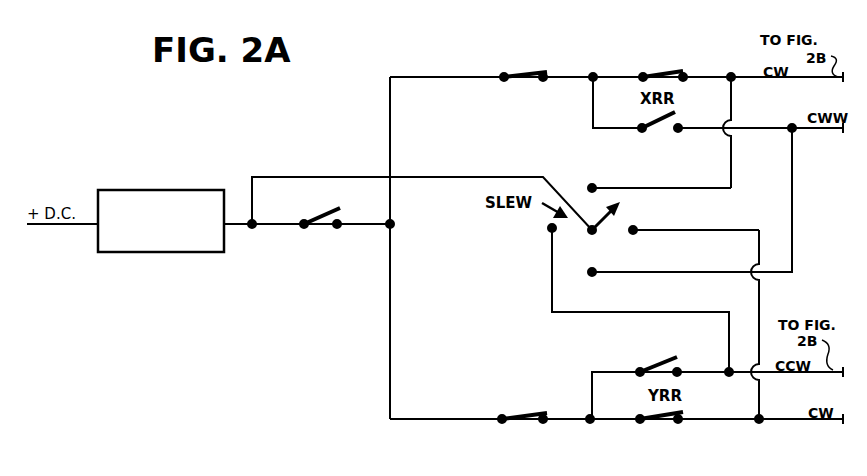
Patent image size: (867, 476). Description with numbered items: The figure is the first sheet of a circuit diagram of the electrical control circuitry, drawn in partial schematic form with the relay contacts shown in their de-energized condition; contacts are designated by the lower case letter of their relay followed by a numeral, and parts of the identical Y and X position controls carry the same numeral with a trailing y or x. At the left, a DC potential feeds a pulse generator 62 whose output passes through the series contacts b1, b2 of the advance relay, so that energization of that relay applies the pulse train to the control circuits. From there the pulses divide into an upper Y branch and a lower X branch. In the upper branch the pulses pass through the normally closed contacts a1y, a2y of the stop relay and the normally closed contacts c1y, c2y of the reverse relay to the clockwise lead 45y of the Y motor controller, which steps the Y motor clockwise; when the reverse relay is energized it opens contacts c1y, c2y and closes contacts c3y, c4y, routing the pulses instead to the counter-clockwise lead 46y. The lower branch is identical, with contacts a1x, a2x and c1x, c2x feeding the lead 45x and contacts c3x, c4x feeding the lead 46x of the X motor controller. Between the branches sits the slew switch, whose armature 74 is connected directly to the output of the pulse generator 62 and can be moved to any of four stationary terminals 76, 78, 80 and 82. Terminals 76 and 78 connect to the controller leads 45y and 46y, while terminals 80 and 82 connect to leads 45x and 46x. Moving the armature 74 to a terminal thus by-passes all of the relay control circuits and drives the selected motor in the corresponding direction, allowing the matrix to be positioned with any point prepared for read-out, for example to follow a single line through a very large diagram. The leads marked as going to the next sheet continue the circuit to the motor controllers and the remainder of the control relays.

The pulse generator 62 is at (178, 190).
The armature 74 is at (607, 220).
The stationary terminal 76 is at (590, 184).
The stationary terminal 78 is at (594, 276).
The stationary terminal 80 is at (549, 230).
The stationary terminal 82 is at (633, 234).
The clockwise lead 45y is at (814, 78).
The controller lead 46y is at (814, 129).
The controller lead 45x is at (815, 373).
The controller lead 46x is at (800, 420).
The relay contact a1y is at (524, 72).
The relay contact a2y is at (543, 80).
The relay contact b1 is at (316, 212).
The relay contact b2 is at (337, 229).
The relay contact c1y is at (657, 72).
The relay contact c2y is at (680, 78).
The relay contact c3y is at (656, 122).
The relay contact c4y is at (678, 132).
The relay contact a1x is at (527, 415).
The relay contact a2x is at (543, 422).
The relay contact c1x is at (652, 366).
The relay contact c2x is at (666, 372).
The relay contact c3x is at (656, 418).
The relay contact c4x is at (678, 423).